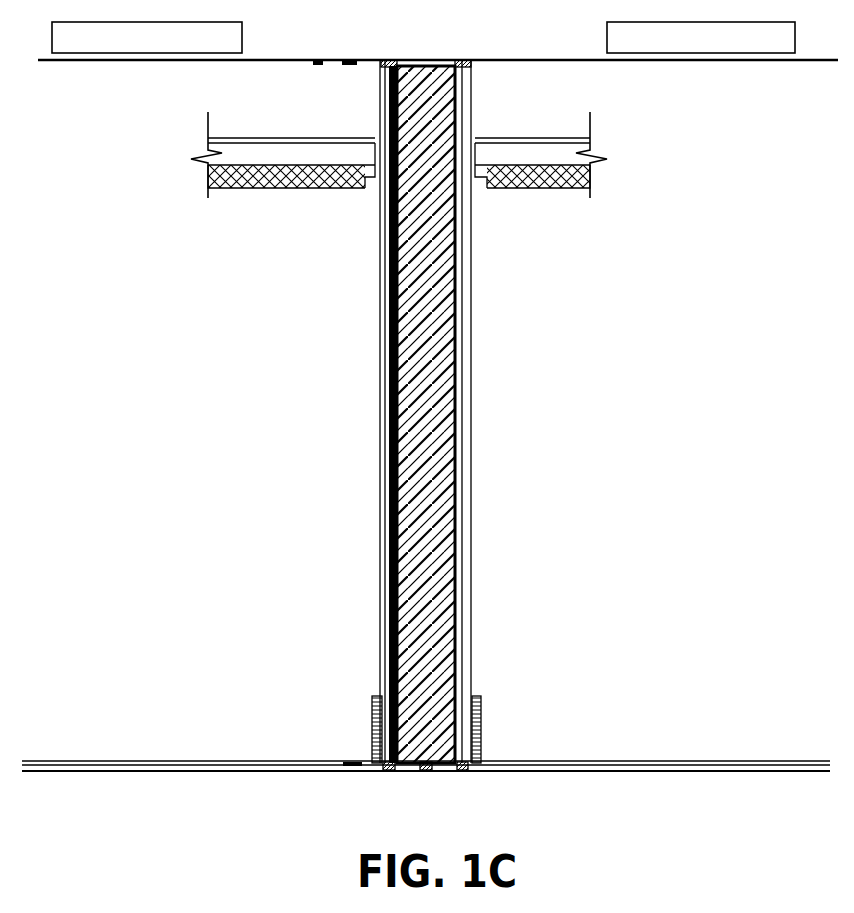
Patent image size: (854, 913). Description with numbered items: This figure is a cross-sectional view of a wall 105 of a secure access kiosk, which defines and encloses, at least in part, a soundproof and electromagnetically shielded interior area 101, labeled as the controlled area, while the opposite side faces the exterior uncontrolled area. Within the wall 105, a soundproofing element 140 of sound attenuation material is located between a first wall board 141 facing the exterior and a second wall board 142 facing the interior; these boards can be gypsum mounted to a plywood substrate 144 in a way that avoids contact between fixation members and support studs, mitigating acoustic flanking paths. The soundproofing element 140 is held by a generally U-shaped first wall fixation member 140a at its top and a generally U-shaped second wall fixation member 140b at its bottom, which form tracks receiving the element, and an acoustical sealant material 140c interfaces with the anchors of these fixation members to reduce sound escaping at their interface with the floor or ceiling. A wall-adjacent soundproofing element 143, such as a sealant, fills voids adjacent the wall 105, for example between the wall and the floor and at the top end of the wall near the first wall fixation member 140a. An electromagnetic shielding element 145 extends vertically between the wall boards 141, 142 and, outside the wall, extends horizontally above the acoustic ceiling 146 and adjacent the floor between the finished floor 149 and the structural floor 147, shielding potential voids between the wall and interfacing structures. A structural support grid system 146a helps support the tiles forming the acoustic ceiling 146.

The interior area 101 is at (293, 737).
The wall 105 is at (410, 76).
The soundproofing element 140 is at (437, 548).
The first wall fixation member 140a is at (426, 58).
The second wall fixation member 140b is at (430, 760).
The acoustical sealant material 140c is at (429, 775).
The first wall board 141 is at (458, 381).
The second wall board 142 is at (388, 478).
The wall-adjacent soundproofing element 143 is at (473, 63).
The plywood substrate 144 is at (392, 352).
The electromagnetic shielding element 145 is at (380, 116).
The acoustic ceiling 146 is at (292, 192).
The structural support grid system 146a is at (374, 186).
The structural floor 147 is at (158, 761).
The finished floor 149 is at (222, 763).